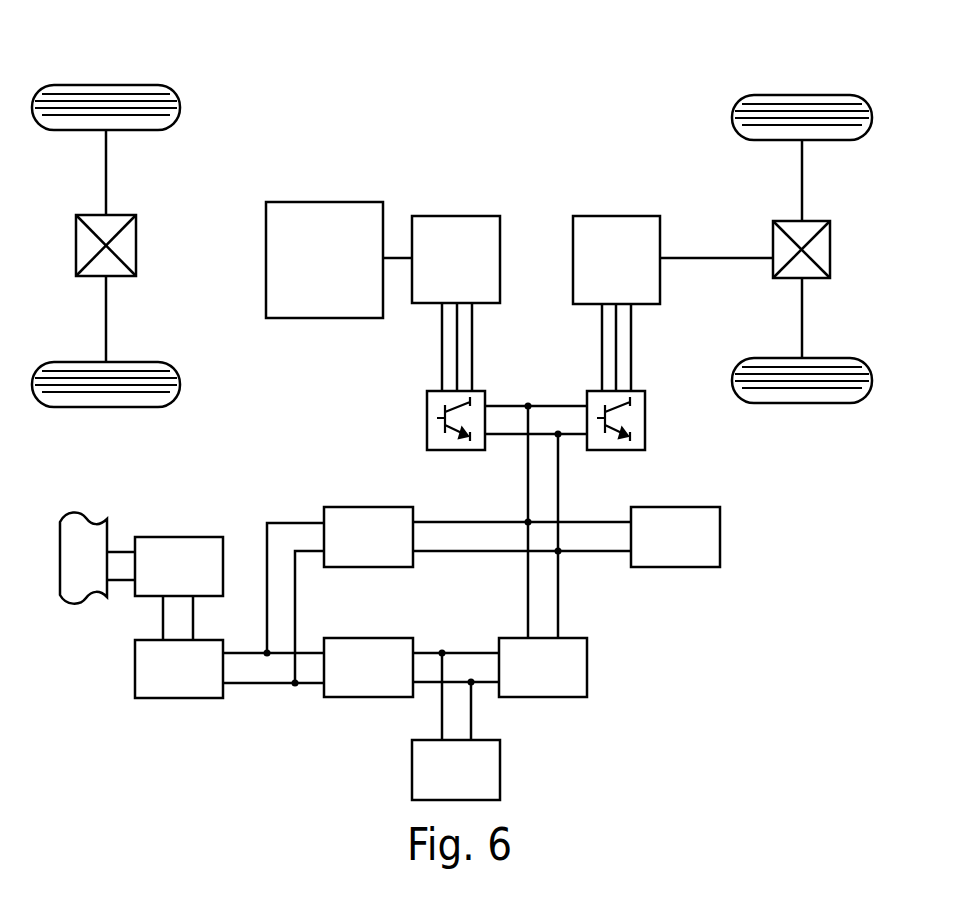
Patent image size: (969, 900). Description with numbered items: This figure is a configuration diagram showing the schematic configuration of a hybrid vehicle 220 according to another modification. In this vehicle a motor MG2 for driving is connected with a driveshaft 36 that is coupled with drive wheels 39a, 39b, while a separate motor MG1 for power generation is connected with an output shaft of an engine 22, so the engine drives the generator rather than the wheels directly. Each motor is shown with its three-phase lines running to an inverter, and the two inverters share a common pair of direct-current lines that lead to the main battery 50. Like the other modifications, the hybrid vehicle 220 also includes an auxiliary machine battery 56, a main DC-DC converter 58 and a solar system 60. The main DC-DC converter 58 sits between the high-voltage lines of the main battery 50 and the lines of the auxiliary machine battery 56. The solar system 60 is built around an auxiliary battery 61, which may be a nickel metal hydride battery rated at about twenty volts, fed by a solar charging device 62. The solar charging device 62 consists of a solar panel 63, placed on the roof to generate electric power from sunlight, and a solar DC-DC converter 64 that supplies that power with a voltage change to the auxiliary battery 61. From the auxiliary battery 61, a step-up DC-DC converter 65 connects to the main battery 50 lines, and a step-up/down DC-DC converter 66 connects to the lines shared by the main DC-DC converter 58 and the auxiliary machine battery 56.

The hybrid vehicle 220 is at (623, 70).
The engine 22 is at (325, 200).
The motor MG1 is at (458, 215).
The motor MG2 is at (617, 215).
The driveshaft 36 is at (748, 255).
The drive wheel 39a is at (802, 95).
The drive wheel 39b is at (802, 403).
The main battery 50 is at (685, 506).
The auxiliary machine battery 56 is at (500, 771).
The main DC-DC converter 58 is at (587, 666).
The solar system 60 is at (338, 448).
The auxiliary battery 61 is at (134, 666).
The solar charging device 62 is at (237, 520).
The solar panel 63 is at (85, 517).
The solar DC-DC converter 64 is at (188, 535).
The step-up DC-DC converter 65 is at (378, 506).
The step-up/down DC-DC converter 66 is at (377, 637).